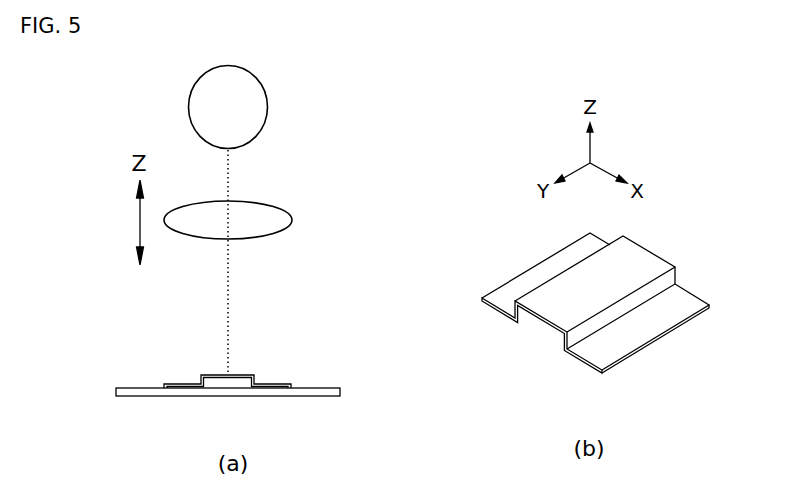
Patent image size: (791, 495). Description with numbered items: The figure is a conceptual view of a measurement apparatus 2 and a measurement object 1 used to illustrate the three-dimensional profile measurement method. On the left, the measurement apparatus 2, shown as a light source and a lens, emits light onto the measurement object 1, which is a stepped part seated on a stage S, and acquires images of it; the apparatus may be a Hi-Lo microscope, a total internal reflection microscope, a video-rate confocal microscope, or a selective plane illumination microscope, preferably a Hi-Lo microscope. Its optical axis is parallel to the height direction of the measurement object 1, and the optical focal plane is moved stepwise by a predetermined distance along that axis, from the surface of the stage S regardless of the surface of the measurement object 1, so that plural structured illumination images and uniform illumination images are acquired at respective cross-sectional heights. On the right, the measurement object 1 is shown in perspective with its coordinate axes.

The measurement object 1 is at (255, 380).
The measurement apparatus 2 is at (318, 145).
The stage S is at (329, 387).